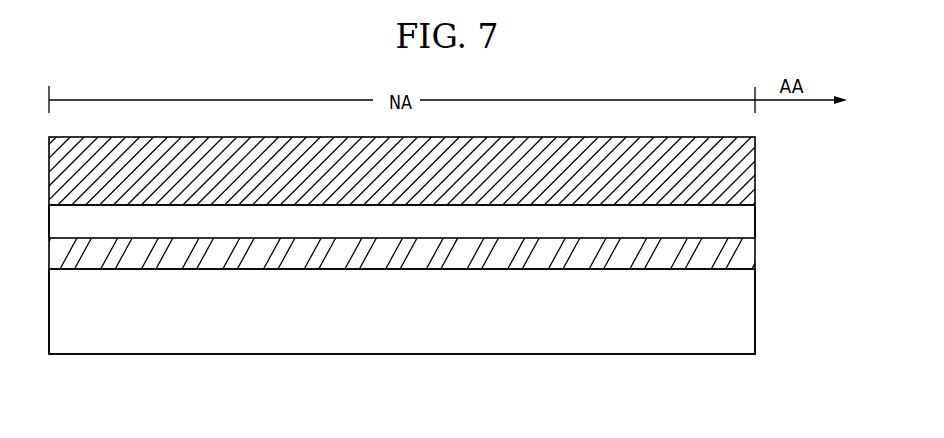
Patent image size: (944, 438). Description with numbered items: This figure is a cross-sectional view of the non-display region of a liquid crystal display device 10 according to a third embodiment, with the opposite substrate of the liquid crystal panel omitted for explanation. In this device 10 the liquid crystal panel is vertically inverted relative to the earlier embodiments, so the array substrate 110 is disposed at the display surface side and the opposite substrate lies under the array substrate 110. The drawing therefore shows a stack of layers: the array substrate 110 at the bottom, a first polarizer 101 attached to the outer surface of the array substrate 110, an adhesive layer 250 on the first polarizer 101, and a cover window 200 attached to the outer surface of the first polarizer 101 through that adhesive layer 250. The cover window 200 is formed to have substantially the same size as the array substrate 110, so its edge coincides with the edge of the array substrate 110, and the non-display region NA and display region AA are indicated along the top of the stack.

The liquid crystal display device 10 is at (390, 427).
The cover window 200 is at (742, 176).
The adhesive layer 250 is at (742, 223).
The first polarizer 101 is at (742, 258).
The array substrate 110 is at (742, 323).